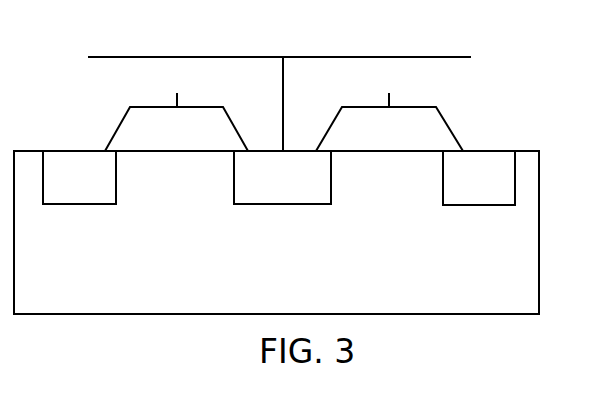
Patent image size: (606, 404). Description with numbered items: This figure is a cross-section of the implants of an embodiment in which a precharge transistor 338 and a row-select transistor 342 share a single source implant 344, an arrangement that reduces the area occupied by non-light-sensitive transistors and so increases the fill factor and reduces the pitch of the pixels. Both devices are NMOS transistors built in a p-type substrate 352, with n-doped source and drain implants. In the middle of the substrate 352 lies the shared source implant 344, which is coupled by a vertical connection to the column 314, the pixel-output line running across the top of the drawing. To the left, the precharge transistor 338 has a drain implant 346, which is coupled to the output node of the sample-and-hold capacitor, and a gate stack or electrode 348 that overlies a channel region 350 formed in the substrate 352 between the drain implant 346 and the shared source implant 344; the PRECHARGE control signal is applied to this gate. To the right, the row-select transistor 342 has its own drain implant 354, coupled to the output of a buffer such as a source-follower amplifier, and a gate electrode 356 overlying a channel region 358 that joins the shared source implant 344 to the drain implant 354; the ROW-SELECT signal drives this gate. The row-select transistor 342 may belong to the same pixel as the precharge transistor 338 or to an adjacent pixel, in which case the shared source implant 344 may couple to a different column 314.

The column 314 is at (257, 57).
The precharge transistor 338 is at (145, 140).
The row-select transistor 342 is at (420, 138).
The shared source implant 344 is at (328, 200).
The drain implant 346 is at (115, 200).
The gate stack or electrode 348 is at (197, 140).
The channel region 350 is at (190, 175).
The substrate 352 is at (367, 288).
The drain implant 354 is at (511, 201).
The gate electrode 356 is at (417, 140).
The channel region 358 is at (414, 175).